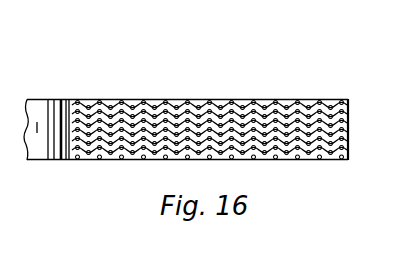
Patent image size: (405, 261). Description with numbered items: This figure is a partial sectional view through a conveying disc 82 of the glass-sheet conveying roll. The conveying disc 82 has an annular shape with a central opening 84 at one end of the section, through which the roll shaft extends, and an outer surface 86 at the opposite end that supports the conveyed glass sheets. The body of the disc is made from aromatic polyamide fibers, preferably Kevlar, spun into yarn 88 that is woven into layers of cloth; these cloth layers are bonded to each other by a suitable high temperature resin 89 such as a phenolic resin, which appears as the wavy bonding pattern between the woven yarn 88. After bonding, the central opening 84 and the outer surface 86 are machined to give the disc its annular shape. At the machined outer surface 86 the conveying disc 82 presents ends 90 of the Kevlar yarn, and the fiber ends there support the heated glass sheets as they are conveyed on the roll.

The conveying disc 82 is at (210, 100).
The central opening 84 is at (56, 100).
The outer surface 86 is at (348, 125).
The yarn 88 is at (154, 122).
The high temperature resin 89 is at (107, 103).
The ends of the Kevlar yarn 90 is at (348, 117).